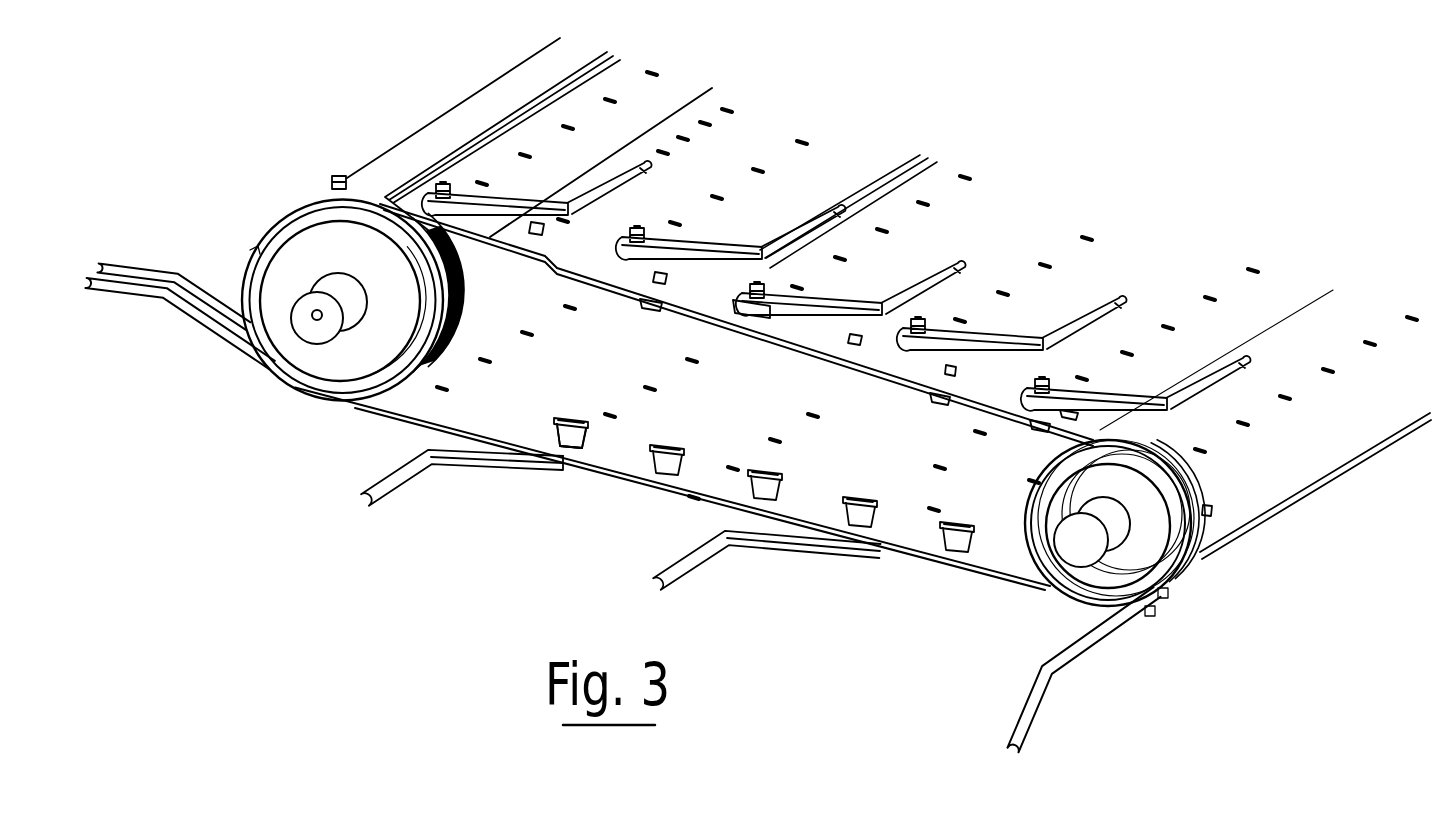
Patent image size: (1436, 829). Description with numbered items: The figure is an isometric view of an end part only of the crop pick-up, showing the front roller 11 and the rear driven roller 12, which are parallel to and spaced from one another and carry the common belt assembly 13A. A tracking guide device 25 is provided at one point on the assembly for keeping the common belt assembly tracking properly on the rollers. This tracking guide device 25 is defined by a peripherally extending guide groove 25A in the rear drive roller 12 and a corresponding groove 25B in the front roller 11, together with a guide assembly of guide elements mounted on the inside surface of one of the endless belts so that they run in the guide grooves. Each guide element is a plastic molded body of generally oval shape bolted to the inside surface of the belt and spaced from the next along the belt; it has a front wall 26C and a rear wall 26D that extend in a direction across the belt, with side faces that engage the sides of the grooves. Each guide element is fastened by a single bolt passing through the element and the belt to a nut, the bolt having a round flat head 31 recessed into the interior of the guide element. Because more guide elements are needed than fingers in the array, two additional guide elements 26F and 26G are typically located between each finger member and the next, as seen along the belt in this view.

The front roller 11 is at (1065, 573).
The rear driven roller 12 is at (290, 382).
The conveyor belt 13A is at (1268, 365).
The tracking guide device 25 is at (597, 458).
The guide groove 25A is at (372, 372).
The groove 25B is at (1198, 547).
The front wall 26C is at (552, 427).
The rear wall 26D is at (578, 452).
The additional guide element 26F is at (590, 362).
The additional guide element 26G is at (778, 470).
The round flat head 31 is at (858, 496).